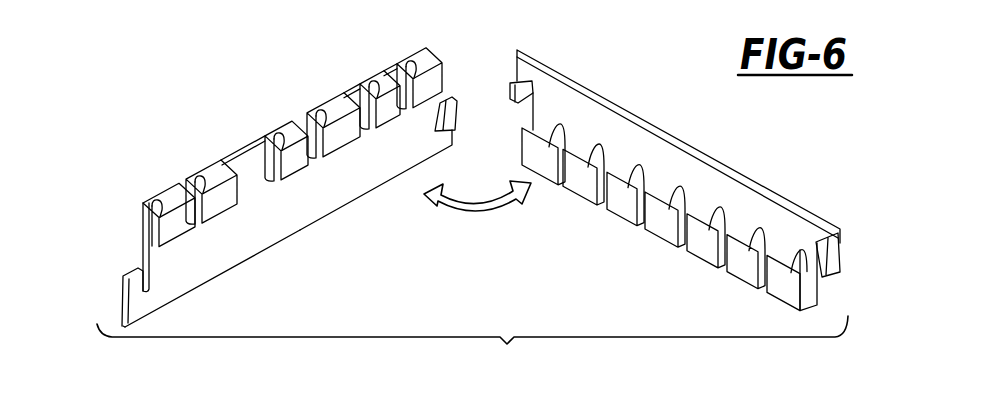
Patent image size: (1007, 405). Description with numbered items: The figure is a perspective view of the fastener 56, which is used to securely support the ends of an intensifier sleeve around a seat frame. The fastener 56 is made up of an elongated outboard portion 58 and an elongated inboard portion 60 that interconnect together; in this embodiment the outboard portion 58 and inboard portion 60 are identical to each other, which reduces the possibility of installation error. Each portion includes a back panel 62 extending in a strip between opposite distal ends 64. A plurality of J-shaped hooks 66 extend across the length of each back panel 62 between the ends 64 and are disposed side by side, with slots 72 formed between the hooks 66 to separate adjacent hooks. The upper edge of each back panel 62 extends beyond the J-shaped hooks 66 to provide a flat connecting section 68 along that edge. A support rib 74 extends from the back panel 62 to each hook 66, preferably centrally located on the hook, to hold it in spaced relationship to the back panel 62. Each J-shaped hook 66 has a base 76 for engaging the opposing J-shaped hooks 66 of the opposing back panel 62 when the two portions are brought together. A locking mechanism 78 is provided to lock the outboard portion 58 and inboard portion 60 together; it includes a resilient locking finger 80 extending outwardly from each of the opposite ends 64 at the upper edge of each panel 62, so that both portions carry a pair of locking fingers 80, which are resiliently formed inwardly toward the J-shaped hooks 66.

The fastener 56 is at (182, 124).
The outboard portion 58 is at (300, 212).
The inboard portion 60 is at (647, 150).
The back panel 62 is at (222, 249).
The distal ends 64 is at (130, 217).
The J-shaped hooks 66 is at (388, 115).
The flat connecting section 68 is at (172, 292).
The slots 72 is at (345, 88).
The support rib 74 is at (780, 250).
The base 76 is at (212, 173).
The locking mechanism 78 is at (100, 303).
The resilient locking finger 80 is at (125, 283).